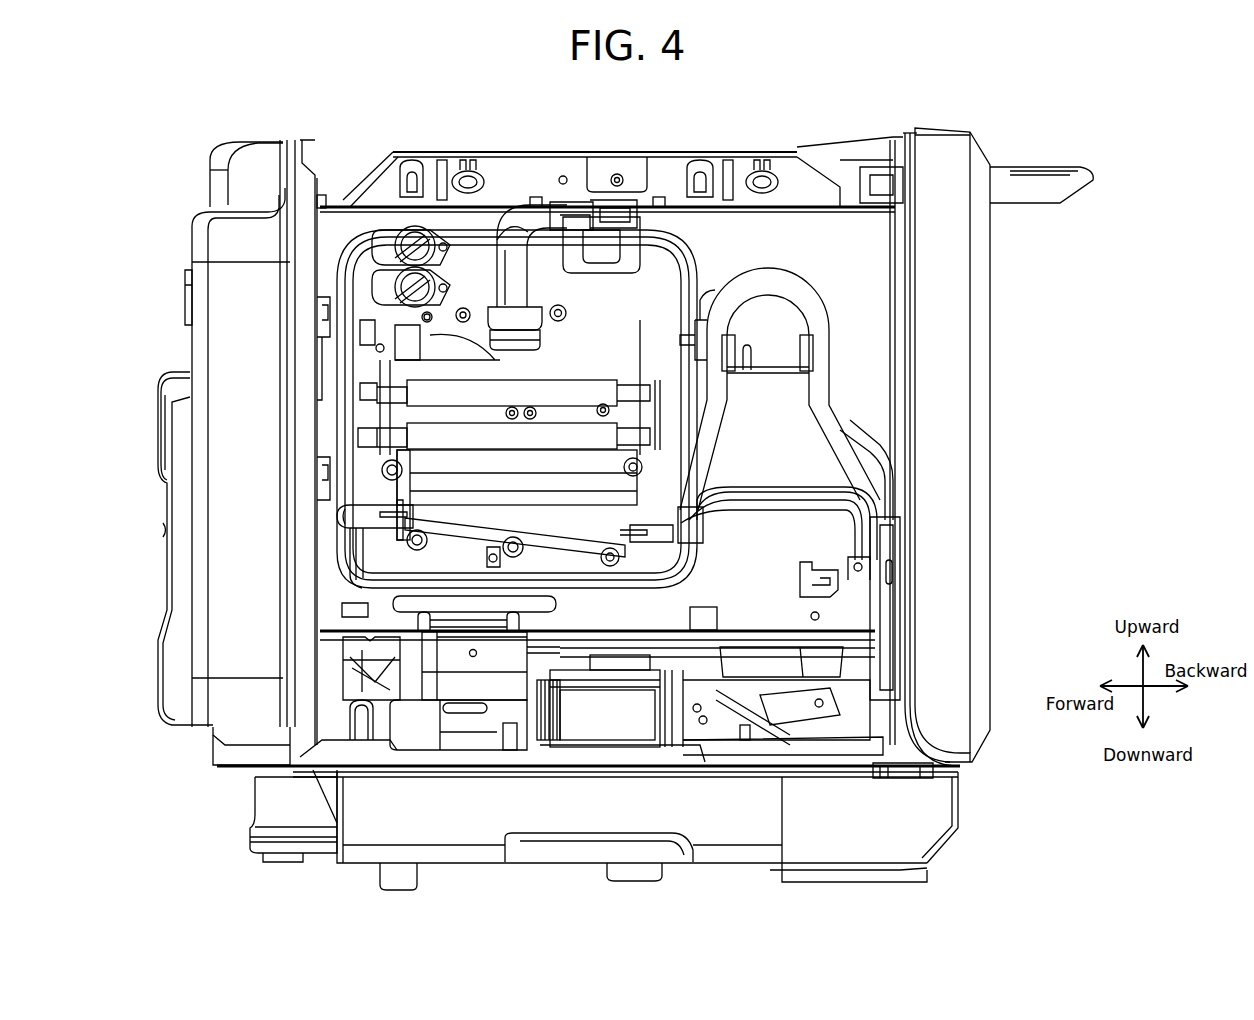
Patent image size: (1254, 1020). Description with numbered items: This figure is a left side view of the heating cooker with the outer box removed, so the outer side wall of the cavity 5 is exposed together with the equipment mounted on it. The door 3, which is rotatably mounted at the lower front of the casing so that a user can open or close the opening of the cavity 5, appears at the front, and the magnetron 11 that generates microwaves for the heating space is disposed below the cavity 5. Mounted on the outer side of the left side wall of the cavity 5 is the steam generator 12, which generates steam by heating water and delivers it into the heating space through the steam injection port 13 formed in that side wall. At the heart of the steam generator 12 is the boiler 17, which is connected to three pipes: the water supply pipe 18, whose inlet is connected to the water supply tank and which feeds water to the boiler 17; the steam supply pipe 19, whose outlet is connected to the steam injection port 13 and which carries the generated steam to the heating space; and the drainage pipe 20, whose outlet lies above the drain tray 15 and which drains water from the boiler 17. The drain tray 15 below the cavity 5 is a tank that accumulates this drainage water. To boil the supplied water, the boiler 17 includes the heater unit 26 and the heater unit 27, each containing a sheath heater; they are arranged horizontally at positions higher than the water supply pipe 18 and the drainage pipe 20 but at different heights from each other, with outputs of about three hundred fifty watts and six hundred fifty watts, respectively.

The door 3 is at (945, 632).
The cavity 5 is at (865, 312).
The magnetron 11 is at (582, 723).
The steam generator 12 is at (732, 250).
The steam injection port 13 is at (617, 230).
The drain tray 15 is at (933, 807).
The boiler 17 is at (600, 340).
The water supply pipe 18 is at (350, 515).
The steam supply pipe 19 is at (512, 330).
The drainage pipe 20 is at (830, 430).
The heater unit 26 is at (407, 230).
The heater unit 27 is at (493, 437).